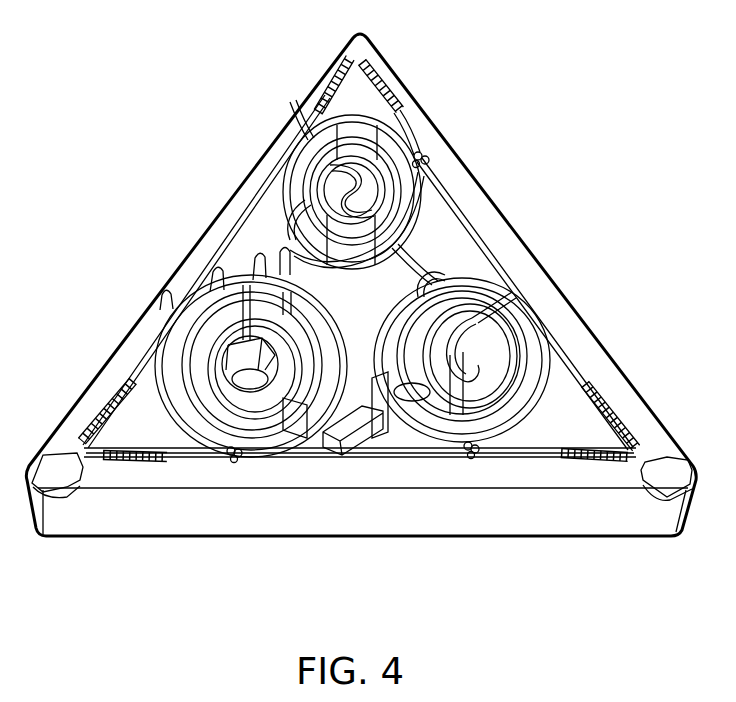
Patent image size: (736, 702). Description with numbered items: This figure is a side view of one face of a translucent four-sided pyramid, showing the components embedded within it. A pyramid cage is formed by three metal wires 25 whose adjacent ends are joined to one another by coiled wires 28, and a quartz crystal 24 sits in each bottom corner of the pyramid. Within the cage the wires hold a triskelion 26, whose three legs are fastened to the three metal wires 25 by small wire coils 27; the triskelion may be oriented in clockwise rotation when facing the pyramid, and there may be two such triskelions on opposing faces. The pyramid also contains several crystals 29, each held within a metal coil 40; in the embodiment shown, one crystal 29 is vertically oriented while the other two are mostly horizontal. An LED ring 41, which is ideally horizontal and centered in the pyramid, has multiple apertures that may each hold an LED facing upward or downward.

The quartz crystal 24 is at (60, 471).
The metal wire 25 is at (215, 273).
The triskelion 26 is at (432, 242).
The small wire coil 27 is at (425, 152).
The coiled wire 28 is at (370, 76).
The crystal 29 is at (332, 82).
The metal coil 40 is at (325, 95).
The LED ring 41 is at (372, 442).